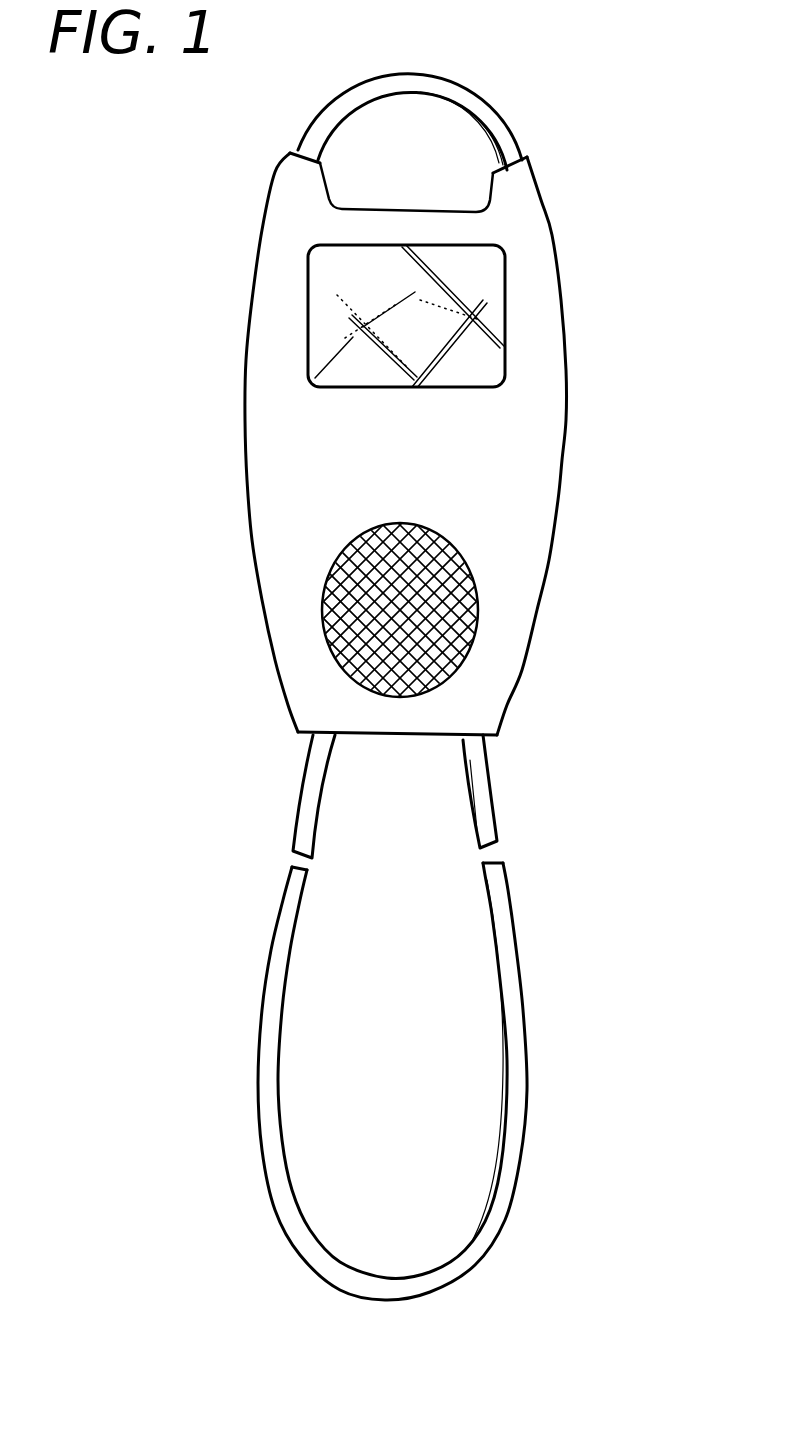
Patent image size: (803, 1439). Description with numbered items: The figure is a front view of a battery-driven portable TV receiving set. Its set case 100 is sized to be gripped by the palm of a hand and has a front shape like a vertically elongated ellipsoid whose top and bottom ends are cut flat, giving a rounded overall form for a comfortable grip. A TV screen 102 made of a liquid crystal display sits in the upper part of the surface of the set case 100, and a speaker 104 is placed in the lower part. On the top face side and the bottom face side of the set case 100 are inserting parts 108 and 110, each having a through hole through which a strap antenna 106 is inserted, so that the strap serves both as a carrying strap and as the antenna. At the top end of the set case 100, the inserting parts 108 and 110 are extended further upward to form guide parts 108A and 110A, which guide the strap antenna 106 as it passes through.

The set case 100 is at (411, 438).
The TV screen 102 is at (480, 273).
The speaker 104 is at (470, 615).
The strap antenna 106 is at (500, 113).
The inserting part 108 is at (262, 388).
The guide part 108A is at (308, 167).
The inserting part 110 is at (533, 482).
The guide part 110A is at (512, 177).